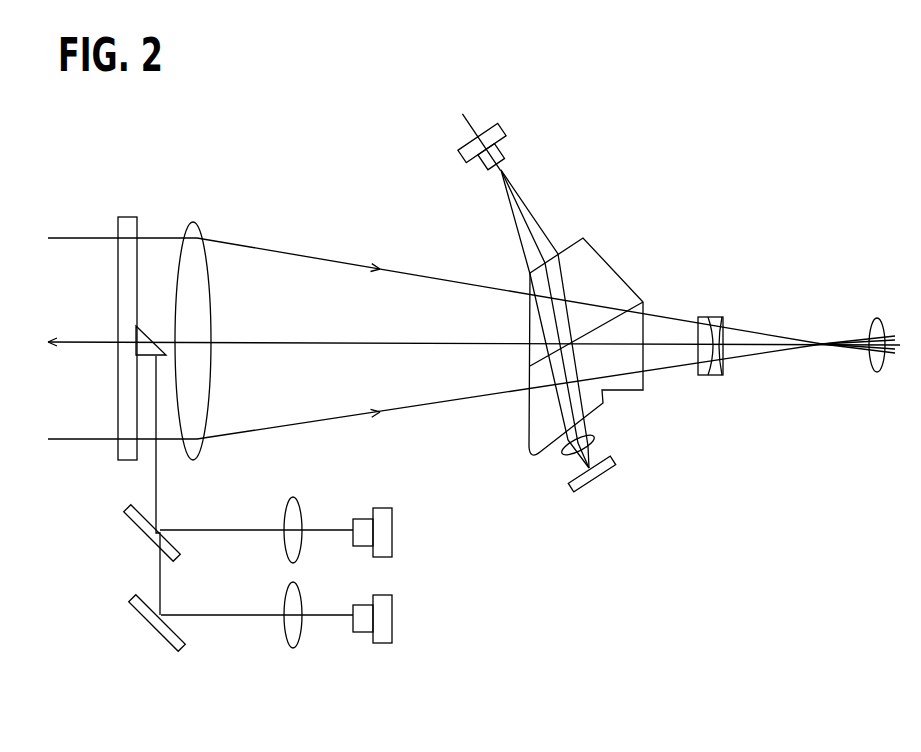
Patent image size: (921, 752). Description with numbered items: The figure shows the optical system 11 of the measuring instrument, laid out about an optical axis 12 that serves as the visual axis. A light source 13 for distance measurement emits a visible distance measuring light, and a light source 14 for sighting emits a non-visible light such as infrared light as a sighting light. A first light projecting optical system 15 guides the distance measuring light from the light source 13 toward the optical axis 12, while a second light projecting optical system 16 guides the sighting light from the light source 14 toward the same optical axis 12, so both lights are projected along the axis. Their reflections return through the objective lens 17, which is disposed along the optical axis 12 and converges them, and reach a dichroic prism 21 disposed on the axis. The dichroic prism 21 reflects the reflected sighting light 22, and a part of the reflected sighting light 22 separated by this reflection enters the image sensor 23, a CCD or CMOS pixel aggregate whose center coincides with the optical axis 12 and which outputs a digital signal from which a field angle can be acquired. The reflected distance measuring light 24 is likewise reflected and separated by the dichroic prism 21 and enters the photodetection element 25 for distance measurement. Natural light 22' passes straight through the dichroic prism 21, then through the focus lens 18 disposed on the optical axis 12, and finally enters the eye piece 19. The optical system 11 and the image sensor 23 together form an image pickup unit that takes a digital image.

The optical system 11 is at (587, 208).
The optical axis 12 is at (247, 342).
The light source for distance measurement 13 is at (385, 510).
The light source for sighting 14 is at (387, 645).
The first light projecting optical system 15 is at (228, 513).
The second light projecting optical system 16 is at (226, 627).
The objective lens 17 is at (200, 226).
The focus lens 18 is at (715, 378).
The eye piece 19 is at (877, 318).
The dichroic prism 21 is at (600, 253).
The reflected sighting light 22 is at (622, 442).
The natural light 22' is at (791, 407).
The image sensor 23 is at (612, 470).
The reflected distance measuring light 24 is at (528, 230).
The photodetection element for distance measurement 25 is at (508, 123).